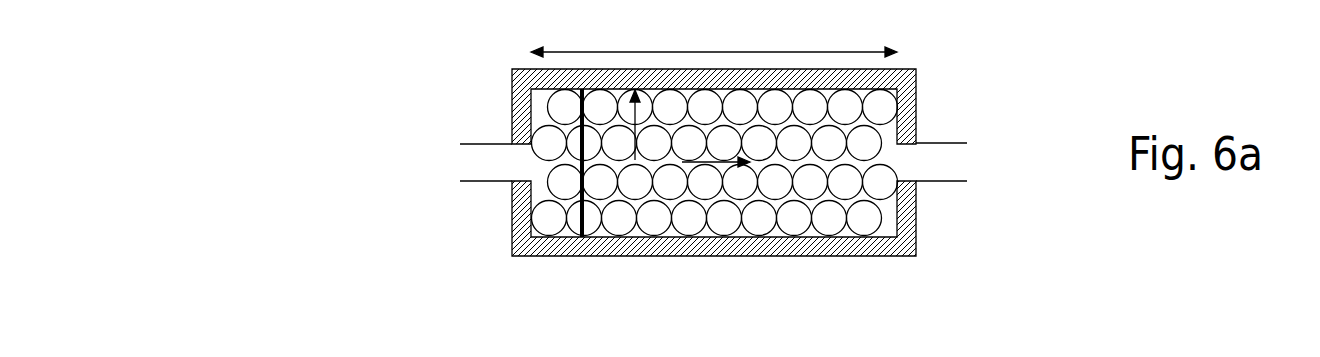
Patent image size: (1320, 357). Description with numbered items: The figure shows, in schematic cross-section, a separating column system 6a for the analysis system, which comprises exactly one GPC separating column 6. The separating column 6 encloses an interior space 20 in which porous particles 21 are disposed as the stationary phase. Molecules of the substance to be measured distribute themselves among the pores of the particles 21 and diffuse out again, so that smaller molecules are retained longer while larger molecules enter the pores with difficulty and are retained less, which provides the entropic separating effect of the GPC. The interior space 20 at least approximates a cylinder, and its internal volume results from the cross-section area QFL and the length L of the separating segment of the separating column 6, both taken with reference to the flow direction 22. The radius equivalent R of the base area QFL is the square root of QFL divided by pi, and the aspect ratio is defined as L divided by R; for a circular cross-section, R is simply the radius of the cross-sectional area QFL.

The separating column system 6a is at (483, 117).
The GPC separating column 6 is at (913, 103).
The interior space 20 is at (842, 180).
The porous particles 21 is at (687, 218).
The flow direction 22 is at (716, 152).
The cross-section area QFL is at (585, 182).
The radius equivalent R is at (641, 125).
The length L is at (714, 39).